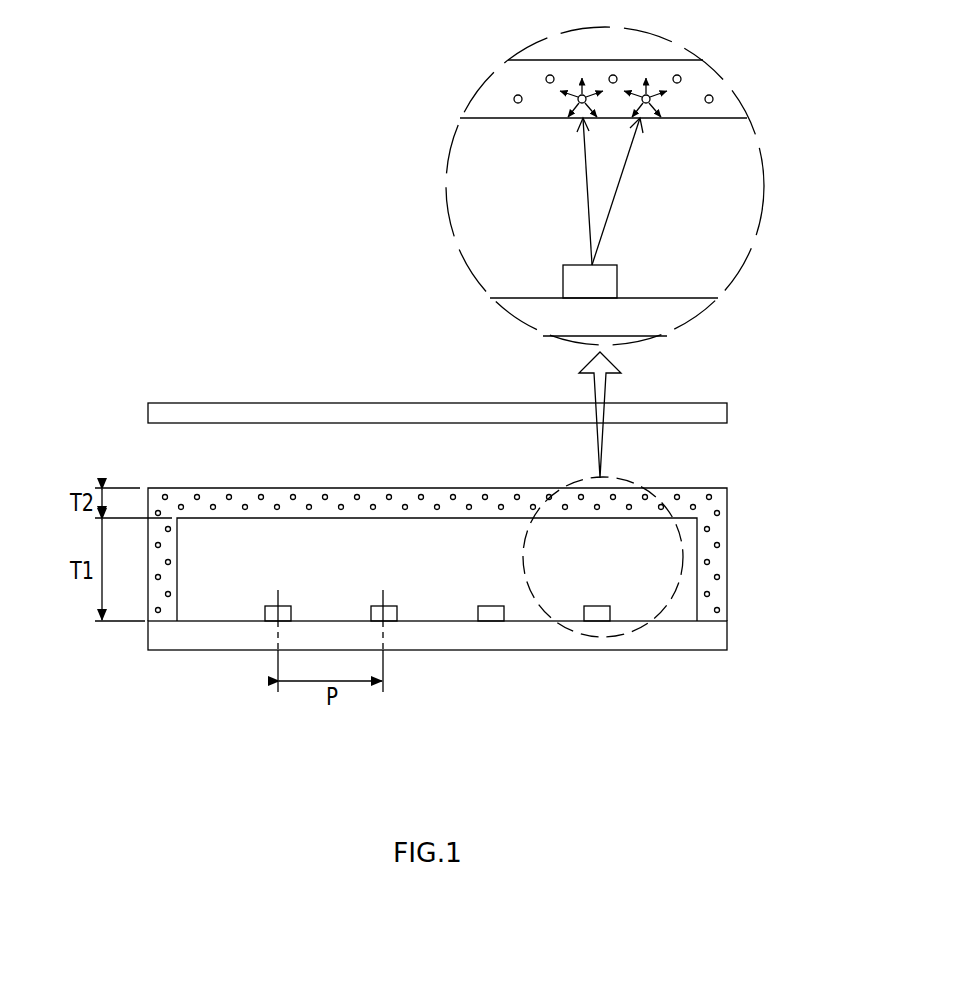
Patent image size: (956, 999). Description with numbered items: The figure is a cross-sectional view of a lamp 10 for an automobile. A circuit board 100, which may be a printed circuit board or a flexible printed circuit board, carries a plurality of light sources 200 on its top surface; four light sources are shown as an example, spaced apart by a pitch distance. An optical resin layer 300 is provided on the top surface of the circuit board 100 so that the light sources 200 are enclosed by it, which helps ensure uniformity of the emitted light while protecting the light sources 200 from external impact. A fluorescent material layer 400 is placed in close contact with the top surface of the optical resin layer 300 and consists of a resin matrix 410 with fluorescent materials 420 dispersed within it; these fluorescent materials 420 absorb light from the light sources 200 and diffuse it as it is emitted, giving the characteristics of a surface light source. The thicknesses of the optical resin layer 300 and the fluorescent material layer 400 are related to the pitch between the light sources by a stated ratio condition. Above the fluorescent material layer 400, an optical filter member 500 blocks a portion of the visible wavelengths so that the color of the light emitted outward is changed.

The lamp 10 is at (122, 336).
The circuit board 100 is at (651, 642).
The light sources 200 is at (492, 613).
The optical resin layer 300 is at (222, 585).
The fluorescent material layer 400 is at (475, 340).
The resin matrix 410 is at (693, 497).
The fluorescent materials 420 is at (615, 495).
The optical filter member 500 is at (290, 410).